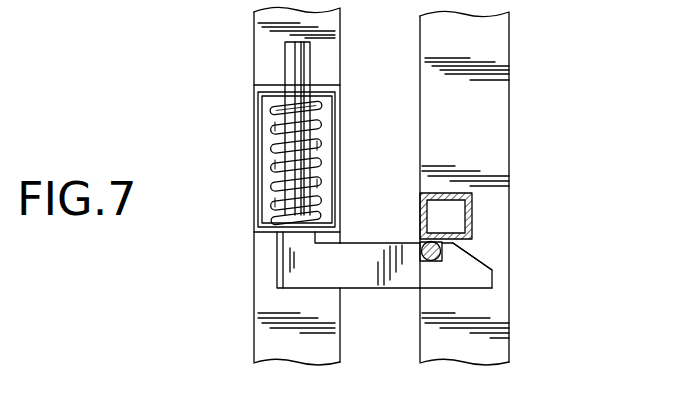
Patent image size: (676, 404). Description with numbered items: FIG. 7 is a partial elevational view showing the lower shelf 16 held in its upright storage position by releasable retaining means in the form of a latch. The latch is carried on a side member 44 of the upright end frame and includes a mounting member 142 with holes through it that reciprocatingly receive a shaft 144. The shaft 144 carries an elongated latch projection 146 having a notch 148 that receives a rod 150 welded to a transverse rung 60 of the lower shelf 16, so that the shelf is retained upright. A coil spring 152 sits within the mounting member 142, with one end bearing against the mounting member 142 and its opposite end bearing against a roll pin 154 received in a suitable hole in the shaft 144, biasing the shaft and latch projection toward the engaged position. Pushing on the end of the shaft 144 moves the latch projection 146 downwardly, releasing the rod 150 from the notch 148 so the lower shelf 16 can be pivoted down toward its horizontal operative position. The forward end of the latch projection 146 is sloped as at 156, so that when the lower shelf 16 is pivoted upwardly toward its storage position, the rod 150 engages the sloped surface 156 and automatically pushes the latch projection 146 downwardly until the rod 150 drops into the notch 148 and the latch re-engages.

The lower shelf 16 is at (503, 118).
The side member 44 is at (265, 59).
The transverse rung 60 is at (472, 205).
The mounting member 142 is at (340, 136).
The shaft 144 is at (311, 73).
The latch projection 146 is at (349, 287).
The notch 148 is at (423, 264).
The rod 150 is at (492, 283).
The coil spring 152 is at (273, 168).
The roll pin 154 is at (273, 109).
The sloped surface 156 is at (482, 259).